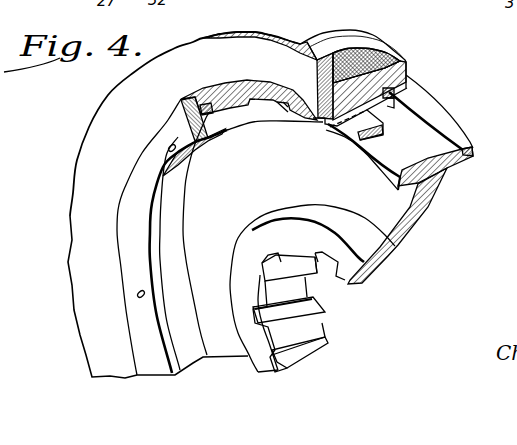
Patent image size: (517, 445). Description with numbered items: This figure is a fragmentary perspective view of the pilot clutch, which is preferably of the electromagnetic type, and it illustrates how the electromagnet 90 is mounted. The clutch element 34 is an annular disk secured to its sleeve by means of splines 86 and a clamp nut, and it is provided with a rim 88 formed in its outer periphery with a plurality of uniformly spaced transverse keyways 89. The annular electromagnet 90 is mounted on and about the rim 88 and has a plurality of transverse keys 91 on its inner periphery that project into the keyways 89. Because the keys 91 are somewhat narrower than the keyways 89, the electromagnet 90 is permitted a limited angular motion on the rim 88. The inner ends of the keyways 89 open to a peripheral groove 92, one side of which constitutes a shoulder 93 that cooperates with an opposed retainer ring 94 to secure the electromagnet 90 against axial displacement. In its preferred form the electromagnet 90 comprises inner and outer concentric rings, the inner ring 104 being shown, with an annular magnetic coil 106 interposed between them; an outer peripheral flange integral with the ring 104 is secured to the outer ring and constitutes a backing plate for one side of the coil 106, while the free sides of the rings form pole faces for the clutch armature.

The retainer ring 94 is at (125, 217).
The rim 88 is at (341, 136).
The transverse keys 91 is at (298, 116).
The electromagnet 90 is at (393, 22).
The annular magnetic coil 106 is at (350, 52).
The inner ring 104 is at (397, 72).
The transverse keyways 89 is at (368, 128).
The shoulder 93 is at (440, 134).
The peripheral groove 92 is at (450, 163).
The element of the clutch 34 is at (427, 206).
The splines 86 is at (315, 317).